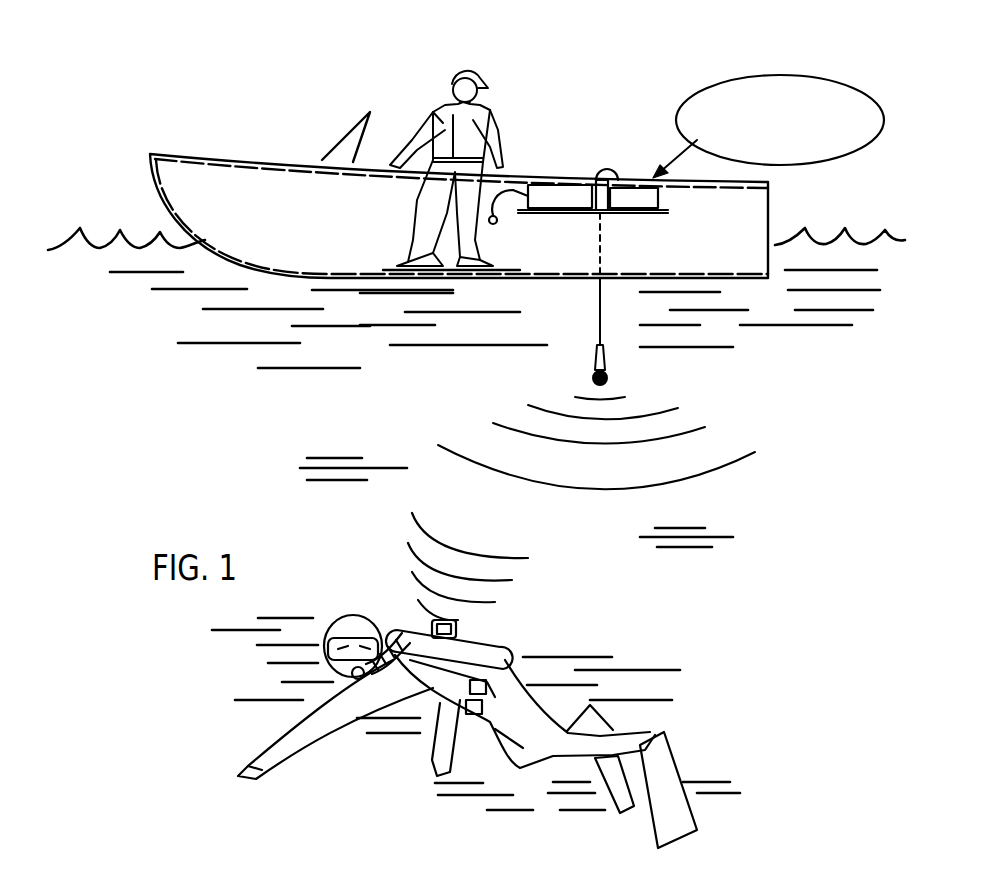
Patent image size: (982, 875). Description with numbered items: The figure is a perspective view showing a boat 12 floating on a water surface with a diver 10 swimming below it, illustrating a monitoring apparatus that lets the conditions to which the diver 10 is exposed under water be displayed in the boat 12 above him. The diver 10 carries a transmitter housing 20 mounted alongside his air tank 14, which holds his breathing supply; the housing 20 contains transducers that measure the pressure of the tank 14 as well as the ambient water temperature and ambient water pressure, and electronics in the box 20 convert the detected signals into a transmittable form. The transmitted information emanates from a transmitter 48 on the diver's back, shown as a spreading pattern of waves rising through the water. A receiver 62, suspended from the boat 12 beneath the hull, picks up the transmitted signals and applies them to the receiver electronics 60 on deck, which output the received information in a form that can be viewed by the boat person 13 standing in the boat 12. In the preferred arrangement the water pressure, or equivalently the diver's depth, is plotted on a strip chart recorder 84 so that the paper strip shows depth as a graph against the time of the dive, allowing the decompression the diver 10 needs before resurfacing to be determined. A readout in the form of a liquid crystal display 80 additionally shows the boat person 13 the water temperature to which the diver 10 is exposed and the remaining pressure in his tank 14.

The diver 10 is at (368, 615).
The boat 12 is at (244, 158).
The boat person 13 is at (442, 110).
The air tank 14 is at (507, 660).
The transmitter housing 20 is at (460, 635).
The transmitter 48 is at (457, 625).
The receiver electronics 60 is at (614, 160).
The receiver 62 is at (609, 377).
The liquid crystal display 80 is at (730, 80).
The strip chart recorder 84 is at (568, 190).